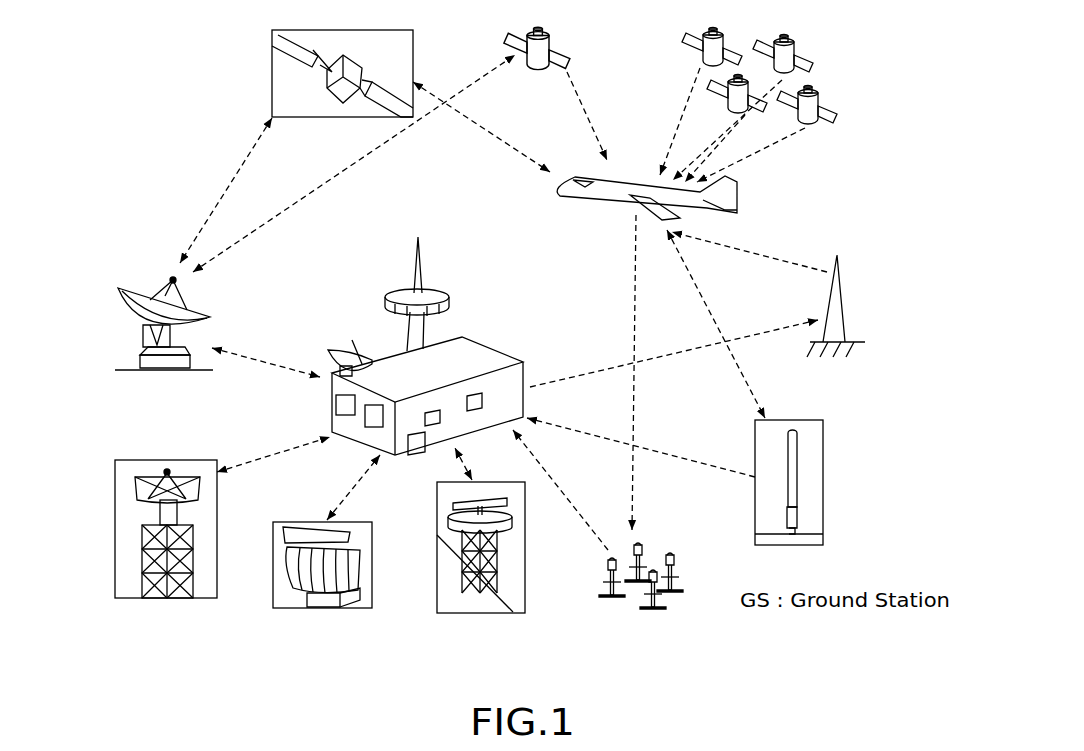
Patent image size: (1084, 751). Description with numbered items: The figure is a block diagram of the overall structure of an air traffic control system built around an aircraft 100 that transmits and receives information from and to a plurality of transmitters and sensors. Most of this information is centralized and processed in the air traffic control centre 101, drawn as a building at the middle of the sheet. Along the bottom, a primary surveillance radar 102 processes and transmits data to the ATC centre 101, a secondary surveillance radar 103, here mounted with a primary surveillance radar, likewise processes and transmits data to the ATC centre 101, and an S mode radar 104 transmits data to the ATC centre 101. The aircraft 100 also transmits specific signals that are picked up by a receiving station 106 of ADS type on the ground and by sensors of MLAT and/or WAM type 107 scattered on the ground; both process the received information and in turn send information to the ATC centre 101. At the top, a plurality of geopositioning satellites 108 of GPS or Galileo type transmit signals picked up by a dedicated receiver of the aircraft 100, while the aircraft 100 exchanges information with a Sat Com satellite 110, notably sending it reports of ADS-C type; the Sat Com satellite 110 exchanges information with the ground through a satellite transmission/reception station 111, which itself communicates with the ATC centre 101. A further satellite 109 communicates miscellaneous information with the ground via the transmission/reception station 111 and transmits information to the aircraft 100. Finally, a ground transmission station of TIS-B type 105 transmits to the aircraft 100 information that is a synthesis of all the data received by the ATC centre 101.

The aircraft 100 is at (740, 180).
The air traffic control centre 101 is at (500, 342).
The primary surveillance radar 102 is at (152, 460).
The secondary surveillance radar 103 is at (310, 522).
The S mode radar 104 is at (527, 575).
The ground transmission station of TIS-B type 105 is at (842, 282).
The receiving station of ADS type 106 is at (825, 515).
The sensors of MLAT and/or WAM type 107 is at (687, 597).
The geopositioning satellites 108 is at (830, 88).
The satellite 109 is at (567, 53).
The Sat Com satellite 110 is at (272, 83).
The satellite transmission/reception station 111 is at (137, 288).